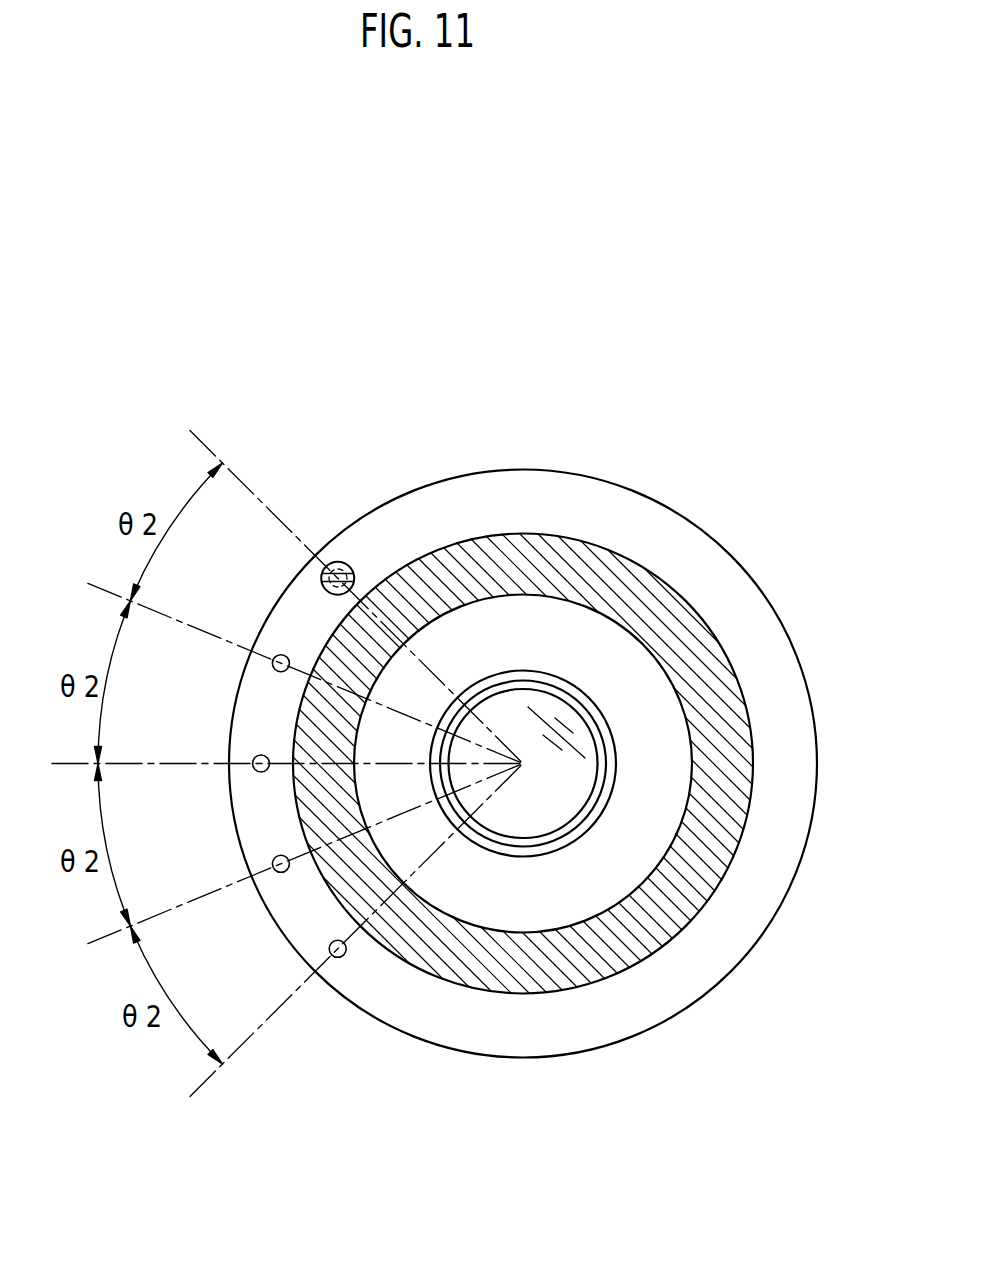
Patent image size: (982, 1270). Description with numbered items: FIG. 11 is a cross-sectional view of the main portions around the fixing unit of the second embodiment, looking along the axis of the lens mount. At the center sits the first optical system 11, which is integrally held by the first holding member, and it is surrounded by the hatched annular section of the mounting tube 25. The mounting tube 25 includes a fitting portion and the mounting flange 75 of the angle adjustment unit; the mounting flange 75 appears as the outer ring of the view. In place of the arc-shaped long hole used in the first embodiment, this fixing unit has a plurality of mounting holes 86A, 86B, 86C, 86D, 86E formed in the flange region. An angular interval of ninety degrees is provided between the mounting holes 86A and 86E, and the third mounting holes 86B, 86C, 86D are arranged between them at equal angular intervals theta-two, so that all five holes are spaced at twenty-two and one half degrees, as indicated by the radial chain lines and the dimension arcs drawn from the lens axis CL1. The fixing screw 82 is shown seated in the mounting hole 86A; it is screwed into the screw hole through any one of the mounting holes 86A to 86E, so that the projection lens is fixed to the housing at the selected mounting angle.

The first optical system 11 is at (558, 810).
The mounting tube 25 is at (490, 973).
The mounting flange 75 is at (718, 572).
The fixing screw 82 is at (334, 562).
The mounting hole 86A is at (321, 578).
The mounting hole 86B is at (273, 668).
The mounting hole 86C is at (256, 771).
The mounting hole 86D is at (280, 873).
The mounting hole 86E is at (338, 958).
The center line CL1 is at (523, 764).